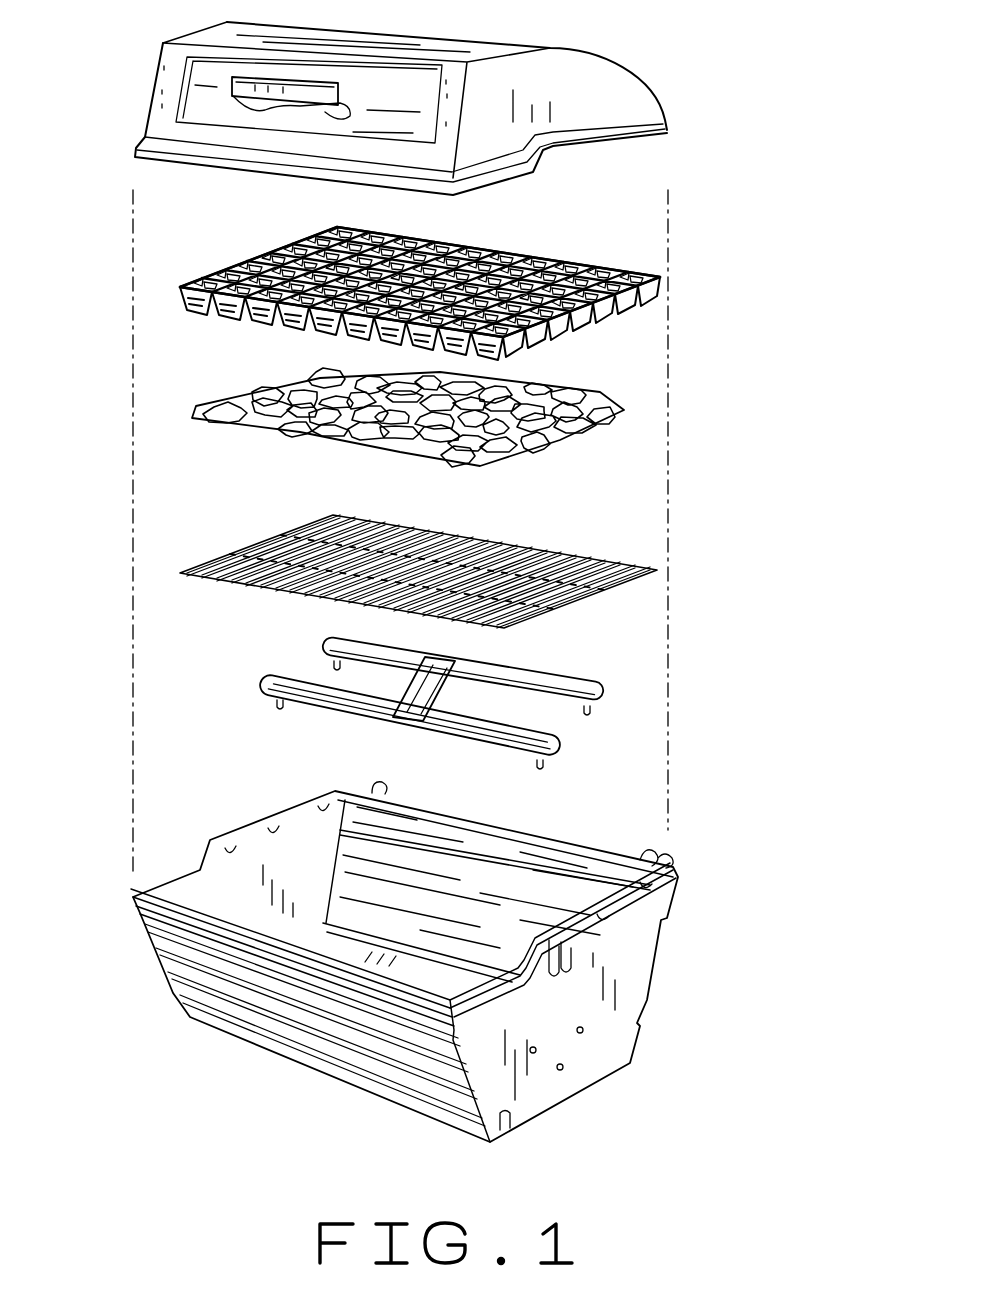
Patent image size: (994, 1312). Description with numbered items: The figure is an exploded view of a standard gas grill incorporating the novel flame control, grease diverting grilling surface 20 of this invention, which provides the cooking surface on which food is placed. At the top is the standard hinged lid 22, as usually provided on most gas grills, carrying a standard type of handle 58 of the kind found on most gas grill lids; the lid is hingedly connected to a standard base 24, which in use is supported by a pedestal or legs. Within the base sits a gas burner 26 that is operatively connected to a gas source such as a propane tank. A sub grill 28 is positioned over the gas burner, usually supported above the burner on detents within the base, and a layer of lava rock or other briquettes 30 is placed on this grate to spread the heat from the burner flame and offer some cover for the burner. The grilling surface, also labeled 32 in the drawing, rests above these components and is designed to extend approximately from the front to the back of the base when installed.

The grilling surface 20 is at (606, 254).
The hinged lid 22 is at (438, 108).
The base 24 is at (637, 928).
The gas burner 26 is at (607, 695).
The sub grill 28 is at (588, 543).
The lava rock or briquettes 30 is at (210, 427).
The cooking tray 32 is at (203, 308).
The handle 58 is at (177, 103).